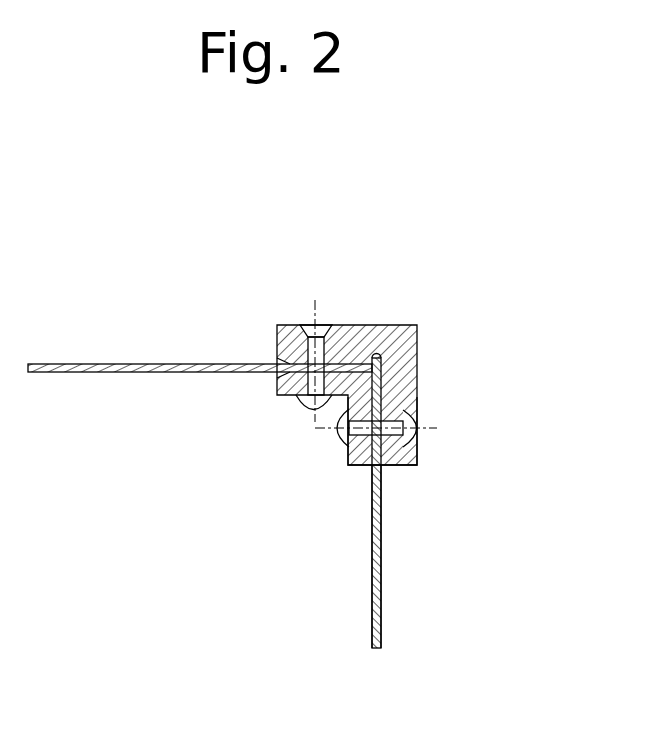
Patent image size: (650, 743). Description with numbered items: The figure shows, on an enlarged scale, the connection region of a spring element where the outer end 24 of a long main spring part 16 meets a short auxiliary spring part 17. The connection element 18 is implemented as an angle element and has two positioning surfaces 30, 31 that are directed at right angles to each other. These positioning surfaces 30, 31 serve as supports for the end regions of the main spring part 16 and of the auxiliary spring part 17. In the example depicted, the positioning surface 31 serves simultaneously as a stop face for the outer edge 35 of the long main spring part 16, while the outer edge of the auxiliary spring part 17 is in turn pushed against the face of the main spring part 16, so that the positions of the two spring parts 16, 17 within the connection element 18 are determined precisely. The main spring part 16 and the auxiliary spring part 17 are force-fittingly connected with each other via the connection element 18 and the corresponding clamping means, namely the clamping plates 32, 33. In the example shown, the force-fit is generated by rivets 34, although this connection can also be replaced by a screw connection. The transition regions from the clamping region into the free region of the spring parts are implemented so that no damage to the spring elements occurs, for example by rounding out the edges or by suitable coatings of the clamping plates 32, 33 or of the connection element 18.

The long main spring part 16 is at (383, 630).
The short auxiliary spring part 17 is at (198, 363).
The connection element 18 is at (415, 325).
The outer end of the long main spring part 24 is at (382, 492).
The positioning surface 30 is at (417, 392).
The positioning surface 31 is at (360, 353).
The clamping plate 32 is at (348, 465).
The clamping plate 33 is at (277, 390).
The rivets 34 is at (330, 432).
The outer edge of the long main spring part 35 is at (376, 358).